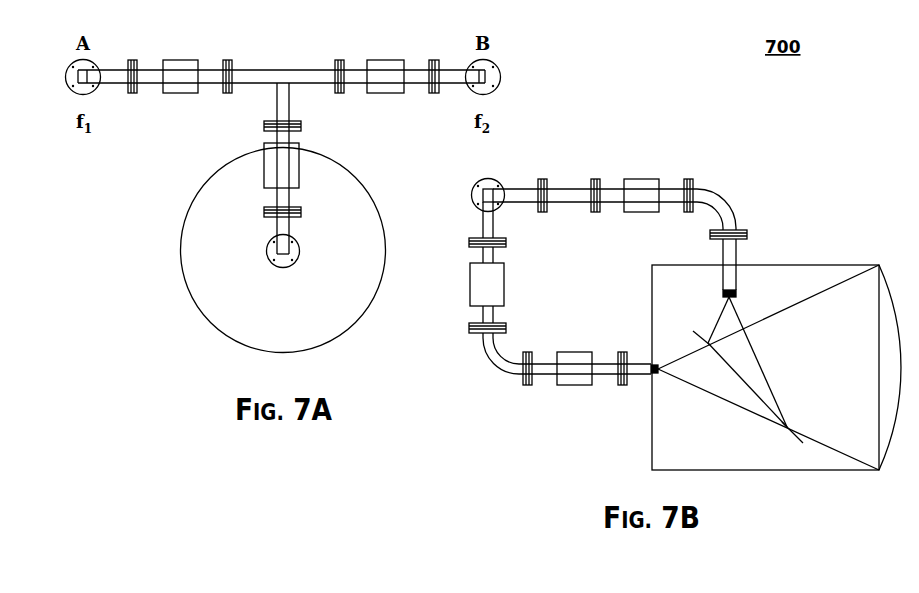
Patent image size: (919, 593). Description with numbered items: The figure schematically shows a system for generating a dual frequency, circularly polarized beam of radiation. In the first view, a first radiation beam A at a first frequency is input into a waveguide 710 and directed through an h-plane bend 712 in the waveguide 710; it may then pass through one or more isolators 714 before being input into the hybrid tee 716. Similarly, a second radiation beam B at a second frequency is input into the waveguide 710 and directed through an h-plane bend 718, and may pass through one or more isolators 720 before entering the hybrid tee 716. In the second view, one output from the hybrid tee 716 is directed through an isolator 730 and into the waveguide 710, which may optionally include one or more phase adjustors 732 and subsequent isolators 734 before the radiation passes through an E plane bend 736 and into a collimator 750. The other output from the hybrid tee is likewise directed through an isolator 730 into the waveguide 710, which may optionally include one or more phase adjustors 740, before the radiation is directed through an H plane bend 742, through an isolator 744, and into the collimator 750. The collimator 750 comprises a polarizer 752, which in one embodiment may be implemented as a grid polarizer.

In FIG. 7A, the waveguide 710 is at (108, 68).
In FIG. 7B, the waveguide 710 is at (512, 197).
In FIG. 7A, the h-plane bend 712 is at (87, 81).
In FIG. 7A, the isolator 714 is at (190, 60).
In FIG. 7A, the hybrid tee 716 is at (283, 75).
In FIG. 7A, the h-plane bend 718 is at (492, 88).
In FIG. 7A, the isolator 720 is at (398, 60).
In FIG. 7B, the isolator 730 is at (488, 178).
In FIG. 7B, the phase adjustor 732 is at (577, 190).
In FIG. 7B, the isolator 734 is at (633, 179).
In FIG. 7B, the E plane bend 736 is at (730, 206).
In FIG. 7B, the phase adjustor 740 is at (469, 288).
In FIG. 7B, the H plane bend 742 is at (489, 357).
In FIG. 7B, the isolator 744 is at (583, 385).
In FIG. 7A, the collimator 750 is at (352, 173).
In FIG. 7B, the collimator 750 is at (790, 265).
In FIG. 7B, the polarizer 752 is at (797, 437).